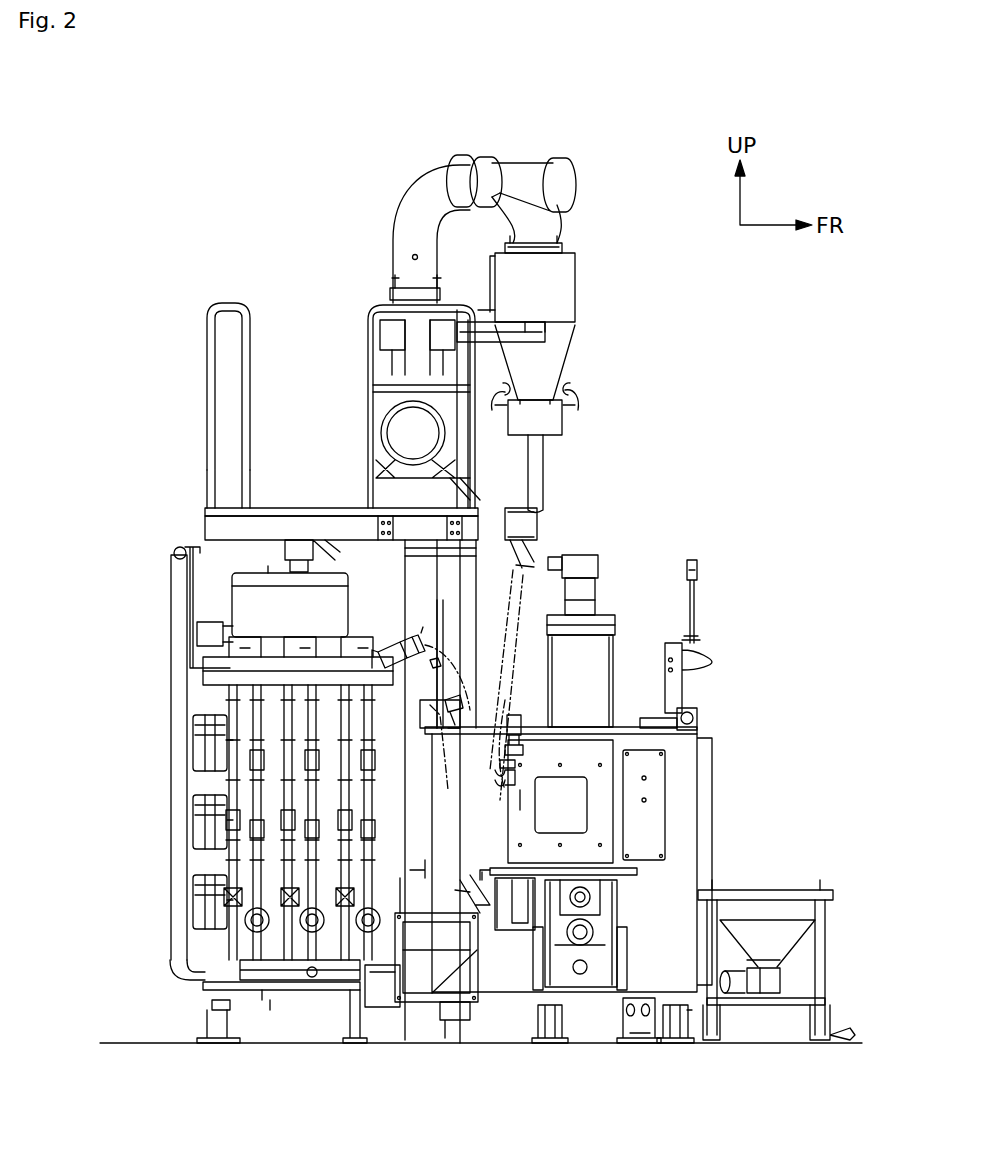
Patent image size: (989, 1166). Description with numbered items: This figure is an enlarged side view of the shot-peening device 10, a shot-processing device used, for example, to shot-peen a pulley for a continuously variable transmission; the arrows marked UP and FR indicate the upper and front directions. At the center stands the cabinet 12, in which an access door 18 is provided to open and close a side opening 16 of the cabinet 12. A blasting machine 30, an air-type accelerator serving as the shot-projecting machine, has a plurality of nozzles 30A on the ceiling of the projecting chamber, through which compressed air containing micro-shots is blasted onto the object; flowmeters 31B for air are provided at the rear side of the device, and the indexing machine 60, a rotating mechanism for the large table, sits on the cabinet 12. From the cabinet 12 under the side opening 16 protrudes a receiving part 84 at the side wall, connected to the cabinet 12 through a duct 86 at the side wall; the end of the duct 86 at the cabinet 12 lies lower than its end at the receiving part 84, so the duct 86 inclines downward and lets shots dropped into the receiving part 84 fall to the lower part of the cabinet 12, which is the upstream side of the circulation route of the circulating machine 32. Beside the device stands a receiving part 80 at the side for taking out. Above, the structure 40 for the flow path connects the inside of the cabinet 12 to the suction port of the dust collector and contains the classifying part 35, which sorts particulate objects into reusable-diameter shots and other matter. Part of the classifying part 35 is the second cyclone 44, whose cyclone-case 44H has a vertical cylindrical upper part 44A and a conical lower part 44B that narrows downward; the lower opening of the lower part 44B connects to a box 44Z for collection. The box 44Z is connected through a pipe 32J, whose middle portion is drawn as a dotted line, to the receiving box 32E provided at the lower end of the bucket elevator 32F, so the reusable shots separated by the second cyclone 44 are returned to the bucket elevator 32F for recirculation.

The shot-peening device 10 is at (760, 368).
The cabinet 12 is at (724, 757).
The side opening 16 is at (585, 755).
The access door 18 is at (565, 748).
The blasting machine 30 is at (396, 637).
The nozzle 30A is at (527, 740).
The flowmeter for air 31B is at (265, 795).
The circulating machine 32 is at (458, 990).
The receiving box 32E is at (430, 940).
The bucket elevator 32F is at (403, 585).
The pipe 32J is at (543, 478).
The classifying part 35 is at (593, 205).
The structure for the flow path 40 is at (539, 130).
The second cyclone 44 is at (598, 293).
The upper part of the cyclone-case 44A is at (563, 273).
The lower part of the cyclone-case 44B is at (553, 357).
The cyclone-case 44H is at (578, 310).
The box for collection 44Z is at (557, 428).
The indexing machine 60 is at (596, 568).
The receiving part at the side for taking out 80 is at (790, 946).
The receiving part at the side wall 84 is at (575, 870).
The duct at the side wall 86 is at (516, 892).